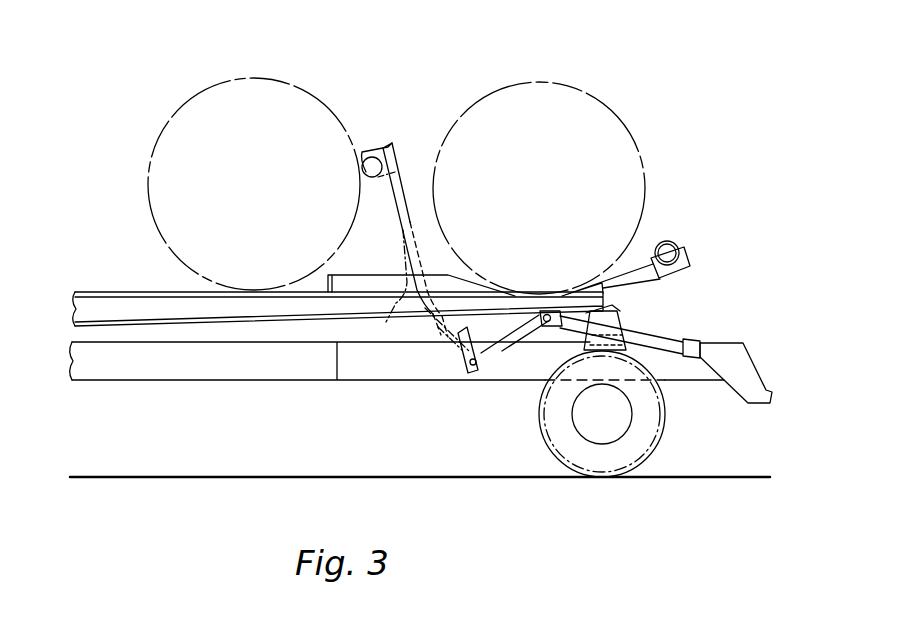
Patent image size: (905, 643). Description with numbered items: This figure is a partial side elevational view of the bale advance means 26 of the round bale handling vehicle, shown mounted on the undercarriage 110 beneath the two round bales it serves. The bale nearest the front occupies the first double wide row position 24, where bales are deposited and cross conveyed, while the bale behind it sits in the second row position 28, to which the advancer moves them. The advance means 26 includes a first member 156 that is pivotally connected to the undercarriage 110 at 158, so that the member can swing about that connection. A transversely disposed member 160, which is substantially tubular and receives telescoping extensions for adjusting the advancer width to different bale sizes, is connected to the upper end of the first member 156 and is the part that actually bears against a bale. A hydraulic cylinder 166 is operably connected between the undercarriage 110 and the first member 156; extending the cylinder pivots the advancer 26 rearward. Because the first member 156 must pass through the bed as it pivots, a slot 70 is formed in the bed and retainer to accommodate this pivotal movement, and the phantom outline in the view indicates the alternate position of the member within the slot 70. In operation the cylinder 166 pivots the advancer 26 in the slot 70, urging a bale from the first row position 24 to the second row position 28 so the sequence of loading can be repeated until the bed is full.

The first double wide row 24 is at (572, 82).
The advance means 26 is at (684, 268).
The second row position 28 is at (220, 82).
The slot 70 is at (389, 318).
The undercarriage 110 is at (378, 372).
The first member 156 is at (632, 286).
The pivotal connection 158 is at (482, 368).
The transversely disposed member 160 is at (670, 241).
The hydraulic cylinder 166 is at (660, 340).